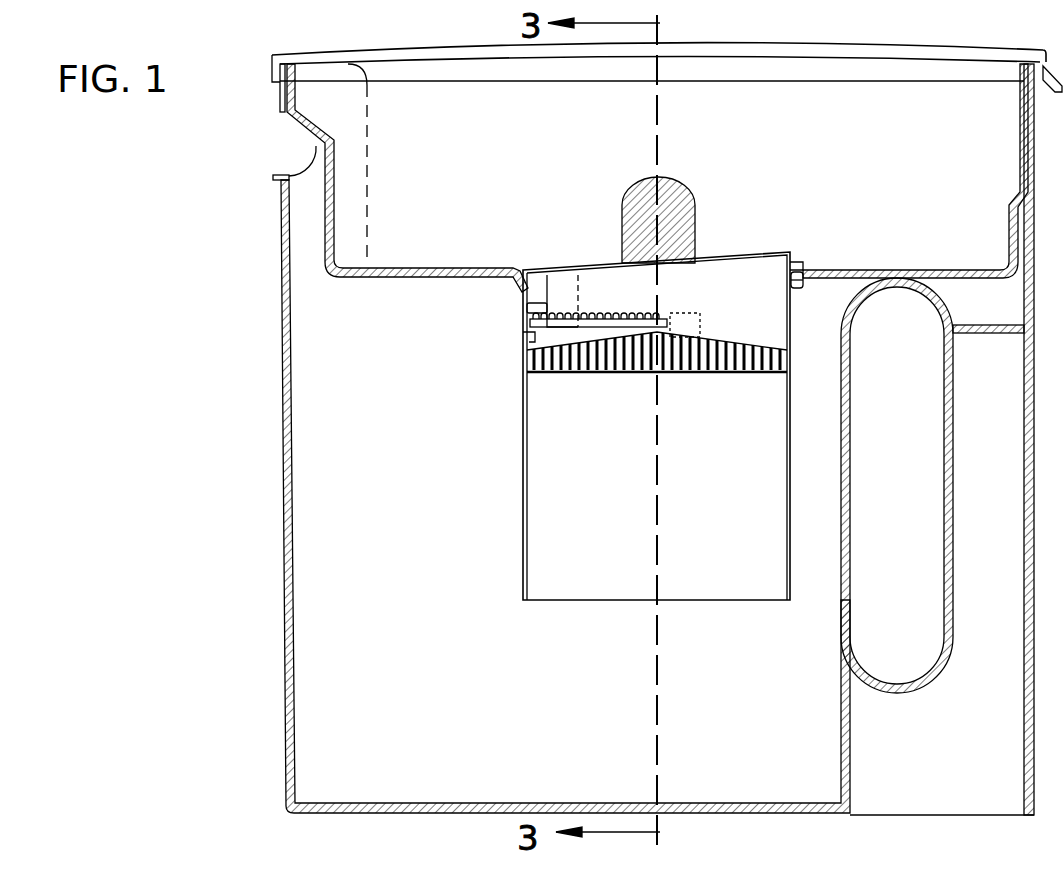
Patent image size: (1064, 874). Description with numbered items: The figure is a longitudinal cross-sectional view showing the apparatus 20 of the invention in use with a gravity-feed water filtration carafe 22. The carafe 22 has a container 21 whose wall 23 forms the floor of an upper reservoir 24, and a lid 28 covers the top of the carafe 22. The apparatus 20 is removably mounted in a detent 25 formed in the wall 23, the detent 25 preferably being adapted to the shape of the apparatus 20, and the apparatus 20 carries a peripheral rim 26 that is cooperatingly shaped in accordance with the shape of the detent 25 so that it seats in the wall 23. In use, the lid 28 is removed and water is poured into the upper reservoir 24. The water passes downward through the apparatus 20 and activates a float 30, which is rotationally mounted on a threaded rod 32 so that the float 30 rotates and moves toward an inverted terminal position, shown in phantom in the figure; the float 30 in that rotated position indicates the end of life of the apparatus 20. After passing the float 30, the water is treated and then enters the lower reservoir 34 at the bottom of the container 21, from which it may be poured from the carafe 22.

The apparatus 20 is at (587, 402).
The container 21 is at (284, 536).
The water filtration carafe 22 is at (601, 439).
The wall 23 is at (456, 272).
The upper reservoir 24 is at (522, 148).
The detent 25 is at (800, 288).
The peripheral rim 26 is at (797, 267).
The lid 28 is at (750, 43).
The float 30 is at (575, 277).
The threaded rod 32 is at (628, 296).
The lower reservoir 34 is at (487, 730).